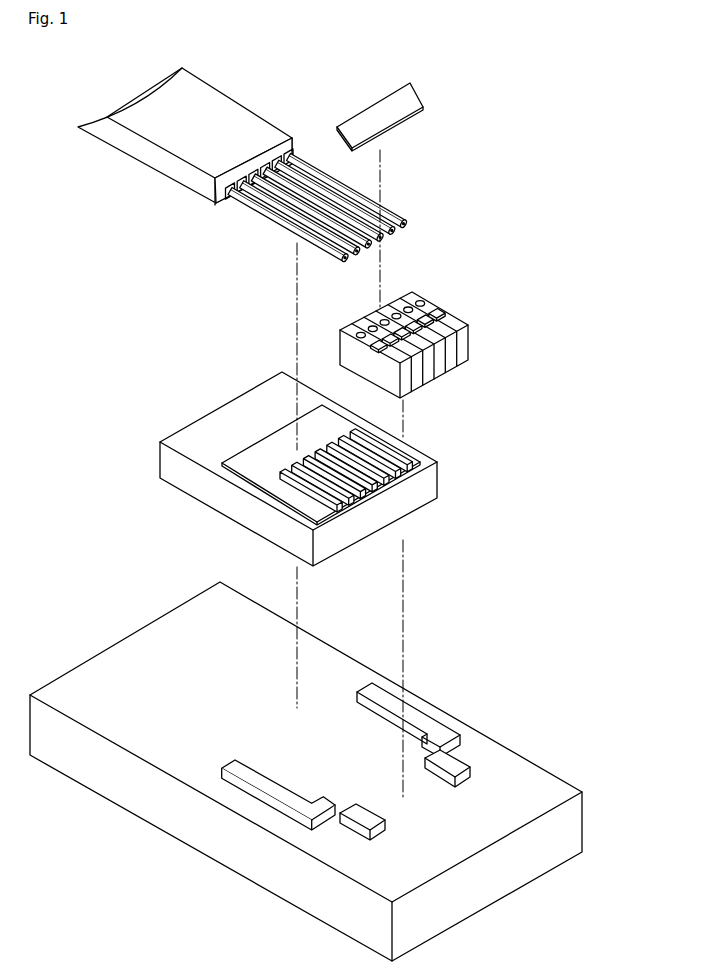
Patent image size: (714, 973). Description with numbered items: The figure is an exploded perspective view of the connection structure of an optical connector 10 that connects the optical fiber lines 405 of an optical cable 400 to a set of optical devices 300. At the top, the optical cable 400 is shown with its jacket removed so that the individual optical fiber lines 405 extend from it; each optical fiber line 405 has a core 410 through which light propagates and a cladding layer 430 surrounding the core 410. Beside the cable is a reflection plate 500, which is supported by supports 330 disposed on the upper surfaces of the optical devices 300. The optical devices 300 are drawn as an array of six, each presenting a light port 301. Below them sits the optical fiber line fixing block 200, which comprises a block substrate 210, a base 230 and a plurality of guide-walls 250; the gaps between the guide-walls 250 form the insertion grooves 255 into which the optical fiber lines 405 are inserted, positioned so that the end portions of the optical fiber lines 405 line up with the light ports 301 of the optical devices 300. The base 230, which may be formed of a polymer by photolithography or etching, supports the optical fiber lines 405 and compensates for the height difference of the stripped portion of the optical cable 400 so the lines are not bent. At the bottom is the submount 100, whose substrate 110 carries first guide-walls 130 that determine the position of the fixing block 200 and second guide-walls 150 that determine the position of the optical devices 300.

The optical connector 10 is at (77, 68).
The submount 100 is at (309, 771).
The substrate 110 is at (103, 783).
The first guide-walls 130 is at (278, 792).
The second guide-walls 150 is at (348, 826).
The optical fiber line fixing block 200 is at (297, 468).
The block substrate 210 is at (240, 512).
The base 230 is at (247, 466).
The guide-walls 250 is at (310, 487).
The alignment grooves 255 is at (347, 489).
The optical devices 300 is at (396, 337).
The light ports 301 is at (357, 332).
The supports 330 is at (434, 309).
The optical cable 400 is at (290, 153).
The optical fiber lines 405 is at (365, 208).
The core 410 is at (433, 218).
The cladding layer 430 is at (378, 191).
The reflection plate 500 is at (420, 88).